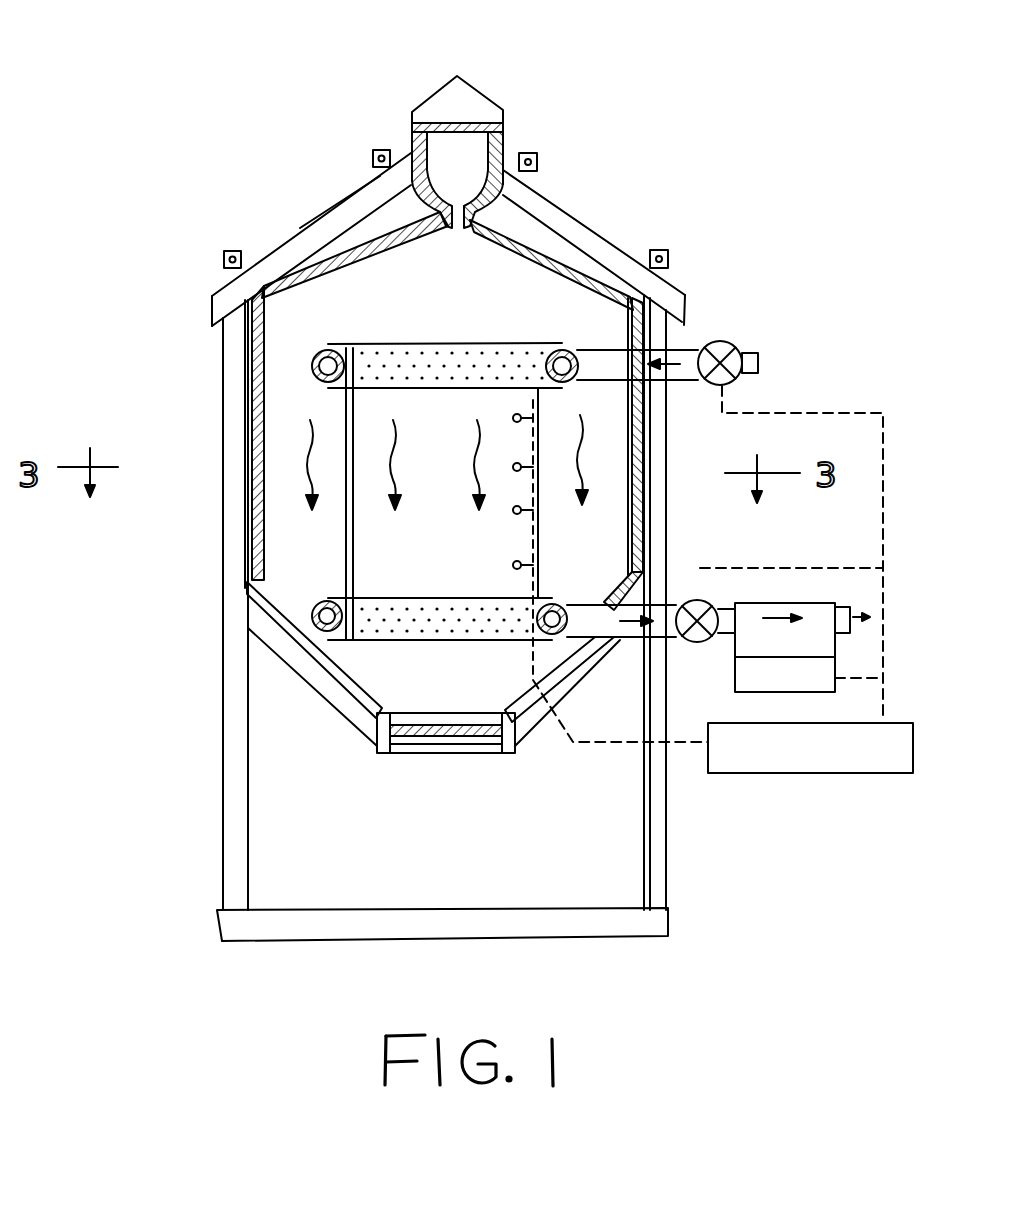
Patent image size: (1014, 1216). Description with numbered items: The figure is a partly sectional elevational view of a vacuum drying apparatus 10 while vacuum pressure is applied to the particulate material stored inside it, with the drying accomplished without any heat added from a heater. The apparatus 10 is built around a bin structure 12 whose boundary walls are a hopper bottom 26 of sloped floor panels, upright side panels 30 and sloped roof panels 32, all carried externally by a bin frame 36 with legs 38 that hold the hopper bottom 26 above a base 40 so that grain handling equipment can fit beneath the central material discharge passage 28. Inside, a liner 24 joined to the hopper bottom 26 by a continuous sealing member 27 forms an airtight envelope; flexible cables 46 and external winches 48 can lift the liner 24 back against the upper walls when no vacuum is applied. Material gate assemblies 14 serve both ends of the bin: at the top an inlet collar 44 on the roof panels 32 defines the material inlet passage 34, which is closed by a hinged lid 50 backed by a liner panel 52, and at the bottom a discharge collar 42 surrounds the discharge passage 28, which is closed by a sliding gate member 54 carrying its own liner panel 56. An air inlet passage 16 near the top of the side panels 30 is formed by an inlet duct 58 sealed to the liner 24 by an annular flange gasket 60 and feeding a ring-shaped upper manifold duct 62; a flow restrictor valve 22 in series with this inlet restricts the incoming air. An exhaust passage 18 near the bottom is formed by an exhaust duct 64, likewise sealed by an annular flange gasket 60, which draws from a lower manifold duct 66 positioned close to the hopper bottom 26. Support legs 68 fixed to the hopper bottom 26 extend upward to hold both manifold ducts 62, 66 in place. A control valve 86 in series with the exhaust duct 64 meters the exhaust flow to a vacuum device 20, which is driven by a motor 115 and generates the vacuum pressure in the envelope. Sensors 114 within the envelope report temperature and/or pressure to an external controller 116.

The vacuum drying apparatus 10 is at (182, 93).
The bin structure 12 is at (218, 700).
The material gate assemblies 14 is at (382, 111).
The air inlet passage 16 is at (688, 348).
The exhaust passage 18 is at (633, 632).
The vacuum device 20 is at (770, 603).
The flow restrictor valve 22 is at (727, 340).
The liner 24 is at (258, 420).
The hopper bottom 26 is at (325, 632).
The sealing member 27 is at (248, 580).
The material discharge passage 28 is at (310, 712).
The side panels 30 is at (245, 493).
The roof panels 32 is at (335, 236).
The material inlet passage 34 is at (448, 150).
The bin frame 36 is at (235, 336).
The legs 38 is at (250, 834).
The base 40 is at (578, 937).
The discharge collar 42 is at (523, 748).
The inlet collar 44 is at (505, 160).
The flexible cables 46 is at (263, 284).
The winches 48 is at (229, 252).
The lid 50 is at (467, 97).
The liner panel 52 is at (472, 126).
The gate member 54 is at (432, 755).
The liner panel 56 is at (460, 740).
The inlet duct 58 is at (687, 385).
The annular flange gasket 60 is at (585, 383).
The upper manifold duct 62 is at (312, 365).
The exhaust duct 64 is at (662, 590).
The lower manifold duct 66 is at (257, 608).
The support legs 68 is at (346, 452).
The control valve 86 is at (697, 599).
The sensors 114 is at (513, 510).
The motor 115 is at (733, 677).
The controller 116 is at (793, 770).